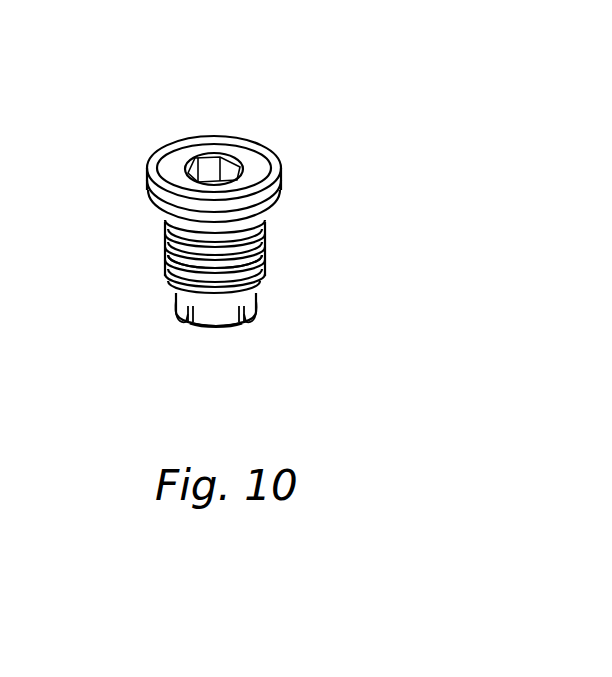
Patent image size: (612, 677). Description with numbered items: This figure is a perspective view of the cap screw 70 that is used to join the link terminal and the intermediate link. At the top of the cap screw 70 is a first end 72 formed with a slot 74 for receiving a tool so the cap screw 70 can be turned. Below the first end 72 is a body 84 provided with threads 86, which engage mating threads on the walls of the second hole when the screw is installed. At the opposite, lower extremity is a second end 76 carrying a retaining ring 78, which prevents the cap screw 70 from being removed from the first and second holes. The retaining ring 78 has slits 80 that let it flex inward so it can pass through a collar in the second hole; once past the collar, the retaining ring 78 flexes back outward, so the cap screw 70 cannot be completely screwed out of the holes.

The cap screw 70 is at (318, 124).
The first end 72 is at (281, 200).
The slot 74 is at (213, 168).
The second end 76 is at (262, 291).
The retaining ring 78 is at (176, 296).
The slits 80 is at (183, 322).
The body 84 is at (263, 248).
The threads 86 is at (172, 254).